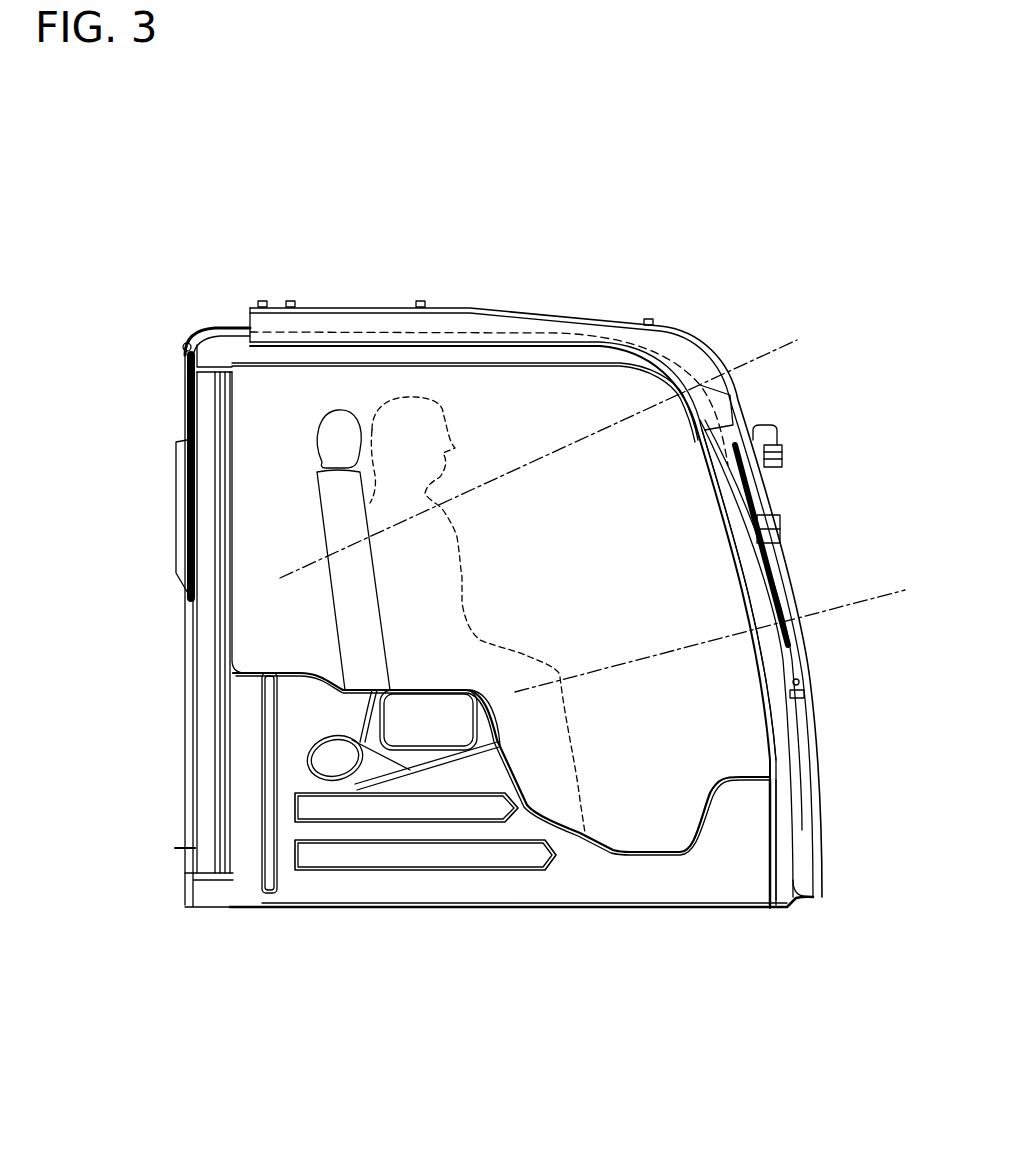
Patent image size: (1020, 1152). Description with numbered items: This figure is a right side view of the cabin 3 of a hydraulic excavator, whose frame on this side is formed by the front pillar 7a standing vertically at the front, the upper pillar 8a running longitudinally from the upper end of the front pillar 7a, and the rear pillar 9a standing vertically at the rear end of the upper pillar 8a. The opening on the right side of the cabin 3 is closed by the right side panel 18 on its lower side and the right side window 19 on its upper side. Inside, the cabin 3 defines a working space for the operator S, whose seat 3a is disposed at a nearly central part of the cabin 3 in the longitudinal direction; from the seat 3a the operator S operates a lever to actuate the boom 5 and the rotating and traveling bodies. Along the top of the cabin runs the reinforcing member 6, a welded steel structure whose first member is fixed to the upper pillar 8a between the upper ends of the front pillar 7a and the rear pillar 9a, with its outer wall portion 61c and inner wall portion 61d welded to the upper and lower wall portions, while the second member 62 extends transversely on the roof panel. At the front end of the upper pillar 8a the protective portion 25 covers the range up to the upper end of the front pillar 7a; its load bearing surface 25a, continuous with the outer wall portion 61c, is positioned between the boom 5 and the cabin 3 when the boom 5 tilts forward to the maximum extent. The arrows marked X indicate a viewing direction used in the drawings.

The cabin 3 is at (436, 230).
The seat 3a is at (320, 515).
The boom 5 is at (797, 342).
The reinforcing member 6 is at (325, 304).
The outer wall portion 61c is at (478, 312).
The inner wall portion 61d is at (610, 322).
The second member 62 is at (403, 330).
The protective portion 25 is at (709, 343).
The load bearing surface 25a is at (718, 394).
The right side window 19 is at (697, 545).
The front pillar 7a is at (783, 805).
The upper pillar 8a is at (255, 353).
The rear pillar 9a is at (205, 762).
The right side panel 18 is at (516, 885).
The operator S is at (465, 577).
The direction indicator X is at (578, 310).